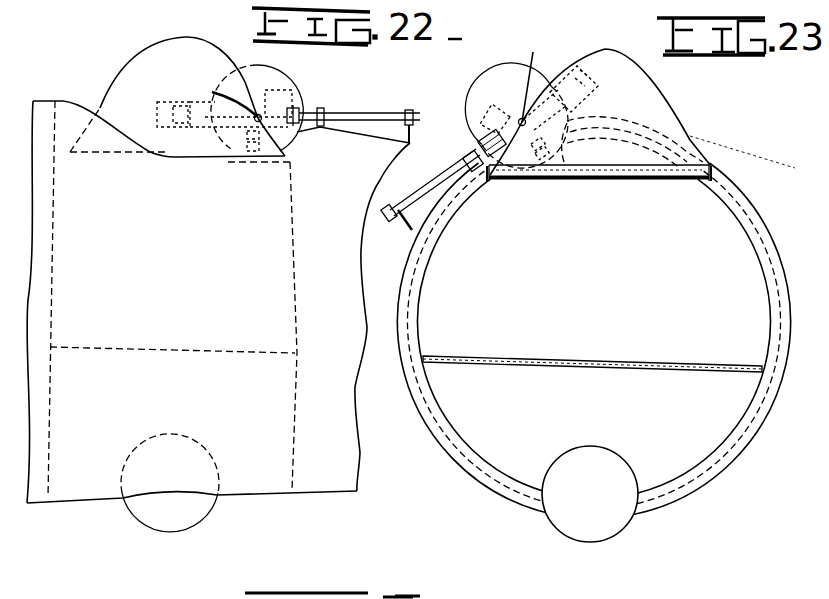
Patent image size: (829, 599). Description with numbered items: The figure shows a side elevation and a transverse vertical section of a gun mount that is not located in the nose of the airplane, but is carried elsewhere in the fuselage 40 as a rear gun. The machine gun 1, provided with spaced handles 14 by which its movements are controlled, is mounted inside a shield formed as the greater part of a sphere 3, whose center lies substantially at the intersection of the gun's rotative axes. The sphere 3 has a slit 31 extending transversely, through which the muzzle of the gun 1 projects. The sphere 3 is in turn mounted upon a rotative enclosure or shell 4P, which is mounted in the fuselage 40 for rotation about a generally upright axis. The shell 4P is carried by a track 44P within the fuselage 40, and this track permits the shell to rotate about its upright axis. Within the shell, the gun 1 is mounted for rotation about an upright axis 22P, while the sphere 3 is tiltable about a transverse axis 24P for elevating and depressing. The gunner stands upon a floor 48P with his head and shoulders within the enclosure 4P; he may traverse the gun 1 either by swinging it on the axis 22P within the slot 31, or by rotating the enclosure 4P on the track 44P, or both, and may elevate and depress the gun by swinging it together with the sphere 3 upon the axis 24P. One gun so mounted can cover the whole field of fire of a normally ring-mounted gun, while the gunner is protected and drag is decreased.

In FIG. 22, the machine gun 1 is at (365, 117).
In FIG. 23, the machine gun 1 is at (430, 189).
In FIG. 22, the sphere 3 is at (272, 77).
In FIG. 23, the sphere 3 is at (507, 90).
In FIG. 22, the handles 14 is at (210, 107).
In FIG. 23, the handles 14 is at (600, 82).
In FIG. 22, the slit 31 is at (306, 112).
In FIG. 23, the slit 31 is at (479, 146).
In FIG. 22, the rotative enclosure or shell 4P is at (133, 73).
In FIG. 23, the rotative enclosure or shell 4P is at (663, 113).
In FIG. 22, the transverse axis 24P is at (215, 89).
In FIG. 23, the transverse axis 24P is at (545, 70).
In FIG. 22, the upright axis 22P is at (238, 156).
In FIG. 23, the upright axis 22P is at (533, 187).
In FIG. 22, the track 44P is at (90, 163).
In FIG. 23, the track 44P is at (705, 183).
In FIG. 22, the fuselage 40 is at (218, 316).
In FIG. 23, the fuselage 40 is at (755, 225).
In FIG. 23, the floor 48P is at (659, 356).